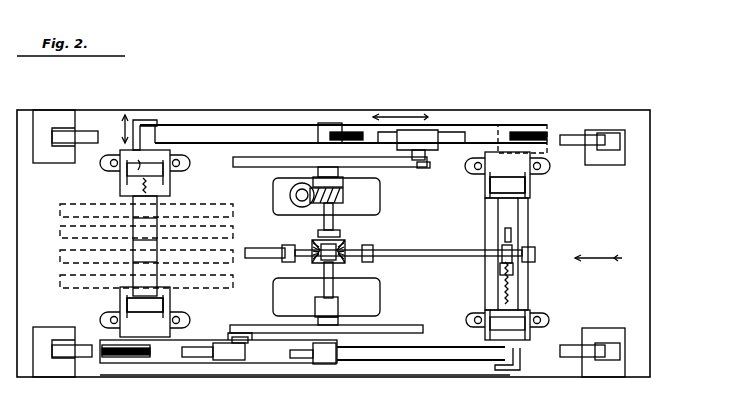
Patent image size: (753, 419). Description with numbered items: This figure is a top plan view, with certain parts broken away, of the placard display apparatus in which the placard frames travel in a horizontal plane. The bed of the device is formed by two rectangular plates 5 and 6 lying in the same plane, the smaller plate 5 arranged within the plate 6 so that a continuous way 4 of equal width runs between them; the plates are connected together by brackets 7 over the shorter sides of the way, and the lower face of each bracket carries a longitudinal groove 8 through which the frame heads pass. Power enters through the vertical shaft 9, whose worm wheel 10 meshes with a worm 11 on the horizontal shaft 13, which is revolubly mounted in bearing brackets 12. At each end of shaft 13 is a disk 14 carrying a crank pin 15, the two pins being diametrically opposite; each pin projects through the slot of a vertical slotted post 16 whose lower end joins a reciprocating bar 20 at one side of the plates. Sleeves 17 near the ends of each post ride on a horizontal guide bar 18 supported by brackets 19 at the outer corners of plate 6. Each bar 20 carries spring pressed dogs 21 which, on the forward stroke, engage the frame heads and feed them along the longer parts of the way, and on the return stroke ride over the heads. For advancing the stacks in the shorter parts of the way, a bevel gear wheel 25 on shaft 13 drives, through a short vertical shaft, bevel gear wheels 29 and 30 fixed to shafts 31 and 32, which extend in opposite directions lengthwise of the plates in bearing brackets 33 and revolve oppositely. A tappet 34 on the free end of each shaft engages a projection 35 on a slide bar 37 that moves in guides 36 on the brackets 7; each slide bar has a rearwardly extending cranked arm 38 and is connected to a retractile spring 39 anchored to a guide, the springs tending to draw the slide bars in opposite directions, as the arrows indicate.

The way 4 is at (218, 133).
The plate 5 is at (450, 338).
The plate 6 is at (538, 357).
The bracket 7 is at (517, 167).
The groove 8 is at (145, 180).
The shaft 9 is at (298, 206).
The worm wheel 10 is at (308, 205).
The worm 11 is at (340, 205).
The bearing bracket 12 is at (373, 201).
The horizontal shaft 13 is at (329, 232).
The disk 14 is at (420, 167).
The crank pin 15 is at (230, 340).
The slotted post 16 is at (432, 145).
The sleeve 17 is at (242, 352).
The guide bar 18 is at (75, 137).
The bracket 19 is at (42, 137).
The reciprocating bar 20 is at (170, 353).
The dog 21 is at (135, 357).
The bevel gear wheel 25 is at (337, 264).
The bevel gear wheel 29 is at (318, 253).
The bevel gear wheel 30 is at (345, 244).
The shaft 31 is at (262, 257).
The shaft 32 is at (418, 252).
The bearing bracket 33 is at (289, 258).
The tappet 34 is at (508, 237).
The projection 35 is at (520, 243).
The guide 36 is at (150, 302).
The slide bar 37 is at (502, 270).
The cranked arm 38 is at (153, 126).
The retractile spring 39 is at (507, 292).